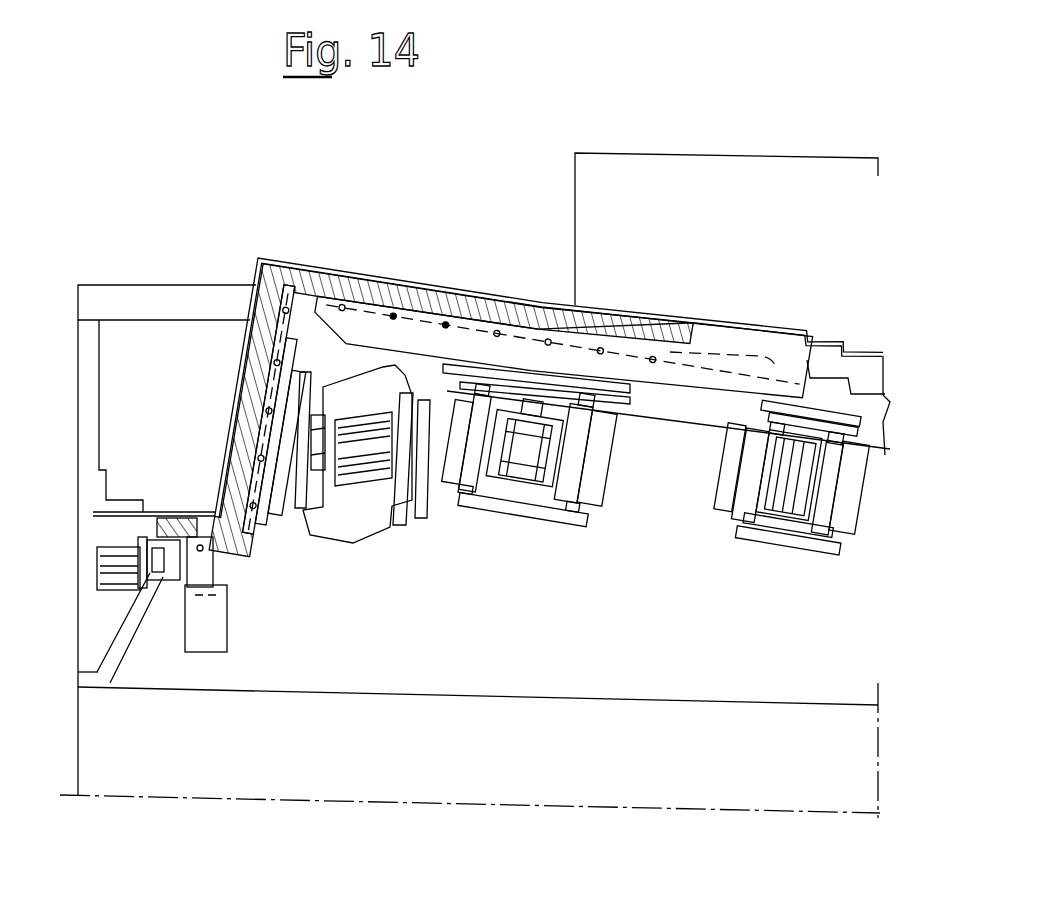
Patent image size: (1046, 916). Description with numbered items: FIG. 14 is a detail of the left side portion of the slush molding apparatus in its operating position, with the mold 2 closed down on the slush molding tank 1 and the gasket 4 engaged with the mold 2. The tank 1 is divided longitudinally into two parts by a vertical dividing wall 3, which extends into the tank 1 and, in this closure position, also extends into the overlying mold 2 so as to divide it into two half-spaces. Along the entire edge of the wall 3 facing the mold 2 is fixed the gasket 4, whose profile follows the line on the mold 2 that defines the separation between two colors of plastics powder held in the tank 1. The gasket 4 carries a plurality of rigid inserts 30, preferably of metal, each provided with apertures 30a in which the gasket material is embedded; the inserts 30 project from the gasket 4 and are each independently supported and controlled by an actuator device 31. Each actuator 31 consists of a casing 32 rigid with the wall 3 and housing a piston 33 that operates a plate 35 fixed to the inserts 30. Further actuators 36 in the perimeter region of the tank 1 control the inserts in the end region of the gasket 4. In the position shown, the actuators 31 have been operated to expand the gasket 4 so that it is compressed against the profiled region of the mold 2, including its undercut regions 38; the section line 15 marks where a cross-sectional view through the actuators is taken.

The slush molding tank 1 is at (197, 776).
The mold 2 is at (369, 270).
The dividing wall 3 is at (531, 686).
The gasket 4 is at (698, 377).
The section line XV-XV 15 is at (656, 296).
The insert 30 is at (297, 500).
The apertures 30a is at (451, 320).
The actuator device 31 is at (486, 516).
The casing 32 is at (360, 527).
The piston 33 is at (347, 467).
The plate 35 is at (298, 410).
The actuator 36 is at (104, 578).
The undercut regions 38 is at (245, 420).